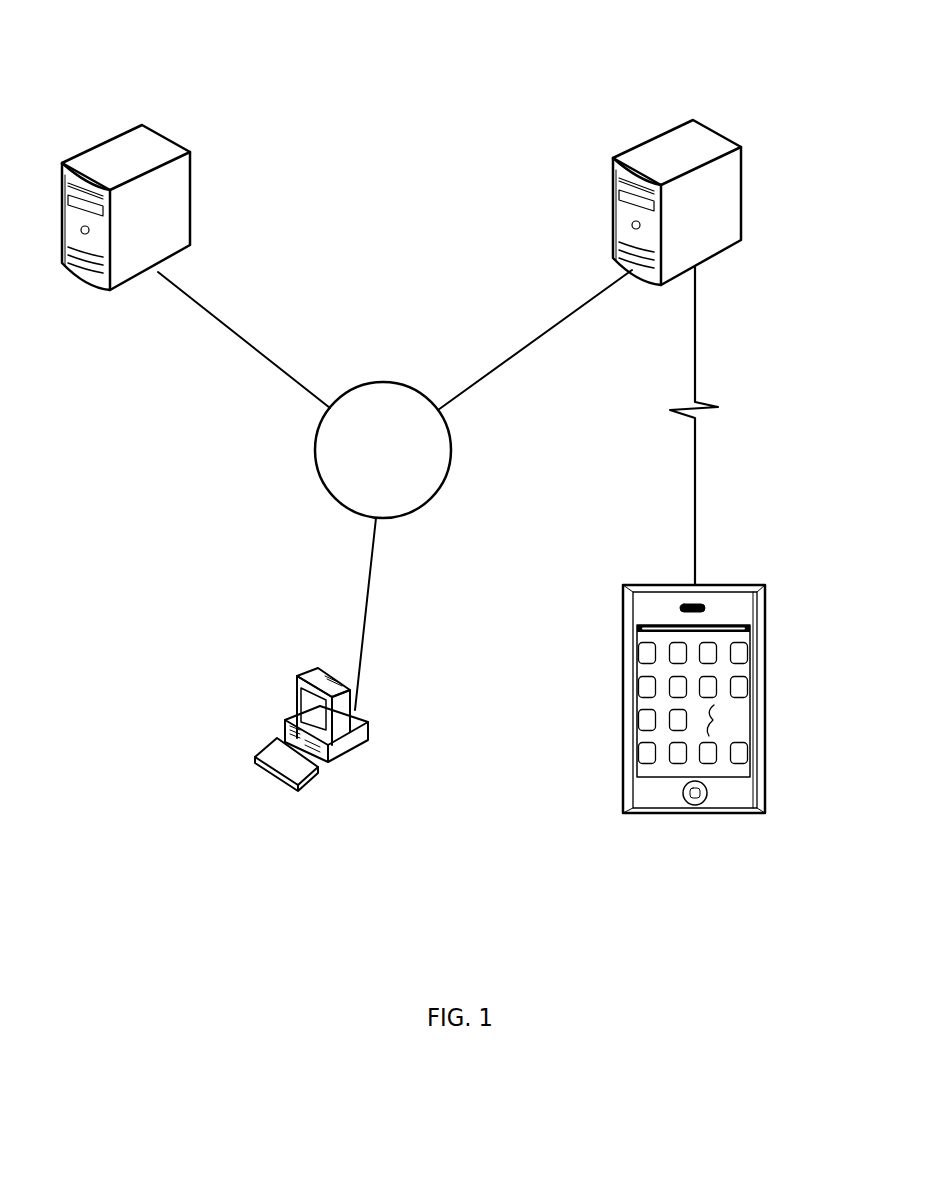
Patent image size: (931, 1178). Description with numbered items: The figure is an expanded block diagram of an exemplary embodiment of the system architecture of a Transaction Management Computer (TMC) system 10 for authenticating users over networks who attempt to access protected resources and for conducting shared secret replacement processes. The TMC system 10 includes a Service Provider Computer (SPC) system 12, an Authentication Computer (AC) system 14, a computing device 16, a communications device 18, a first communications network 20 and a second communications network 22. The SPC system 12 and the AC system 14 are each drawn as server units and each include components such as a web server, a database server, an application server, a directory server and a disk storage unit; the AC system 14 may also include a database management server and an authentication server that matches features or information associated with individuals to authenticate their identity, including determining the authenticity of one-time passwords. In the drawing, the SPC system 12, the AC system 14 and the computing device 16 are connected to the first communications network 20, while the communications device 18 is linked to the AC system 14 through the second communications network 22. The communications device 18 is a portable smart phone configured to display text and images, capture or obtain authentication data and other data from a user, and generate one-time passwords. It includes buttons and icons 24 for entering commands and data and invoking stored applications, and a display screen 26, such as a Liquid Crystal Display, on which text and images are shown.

The Transaction Management Computer (TMC) system 10 is at (143, 95).
The Service Provider Computer (SPC) system 12 is at (95, 145).
The Authentication Computer (AC) system 14 is at (707, 125).
The computing device 16 is at (350, 753).
The communications device 18 is at (731, 746).
The first communications network 20 is at (383, 435).
The second communications network 22 is at (701, 426).
The buttons and icons 24 is at (739, 652).
The display screen 26 is at (715, 722).